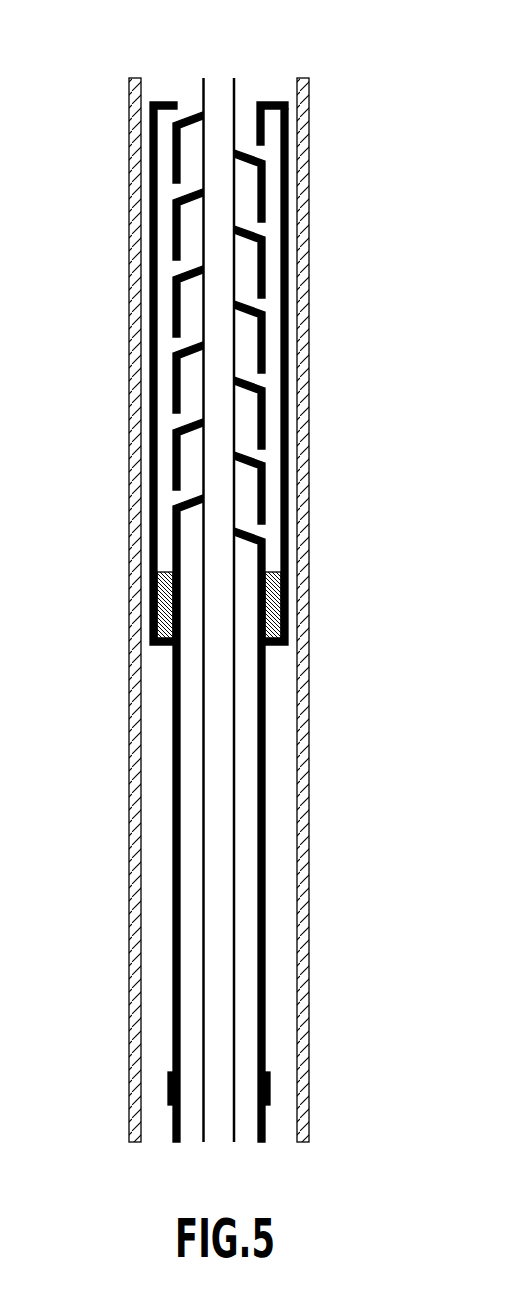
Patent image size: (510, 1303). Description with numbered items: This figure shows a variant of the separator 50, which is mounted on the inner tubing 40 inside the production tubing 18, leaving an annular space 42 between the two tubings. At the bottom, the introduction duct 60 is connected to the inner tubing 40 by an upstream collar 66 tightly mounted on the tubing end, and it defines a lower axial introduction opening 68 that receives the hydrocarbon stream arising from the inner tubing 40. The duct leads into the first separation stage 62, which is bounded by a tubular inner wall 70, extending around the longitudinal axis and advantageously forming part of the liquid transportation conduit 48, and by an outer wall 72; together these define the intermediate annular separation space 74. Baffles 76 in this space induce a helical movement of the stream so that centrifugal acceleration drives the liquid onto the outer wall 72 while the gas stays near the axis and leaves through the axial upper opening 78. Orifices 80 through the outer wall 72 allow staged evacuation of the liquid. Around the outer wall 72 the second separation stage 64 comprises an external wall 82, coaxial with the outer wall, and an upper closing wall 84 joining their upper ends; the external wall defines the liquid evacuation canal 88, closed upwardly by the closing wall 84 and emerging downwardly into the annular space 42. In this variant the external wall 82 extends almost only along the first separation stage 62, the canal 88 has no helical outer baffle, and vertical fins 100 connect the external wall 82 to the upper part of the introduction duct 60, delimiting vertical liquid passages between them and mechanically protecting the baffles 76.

The production tubing 18 is at (140, 258).
The inner tubing 40 is at (268, 1125).
The annular space 42 is at (158, 1122).
The liquid transportation conduit 48 is at (223, 1122).
The separator 50 is at (138, 500).
The introduction duct 60 is at (263, 843).
The first separation stage 62 is at (160, 314).
The second separation stage 64 is at (306, 236).
The upstream collar 66 is at (265, 1083).
The lower axial introduction opening 68 is at (192, 1092).
The inner peripheral wall 70 is at (227, 282).
The outer peripheral wall 72 is at (263, 177).
The intermediate annular separation space 74 is at (192, 148).
The baffle 76 is at (192, 112).
The axial upper opening 78 is at (243, 110).
The orifice 80 is at (178, 190).
The external wall 82 is at (287, 380).
The upper closing wall 84 is at (265, 103).
The liquid evacuation canal 88 is at (272, 482).
The vertical fins 100 is at (273, 601).